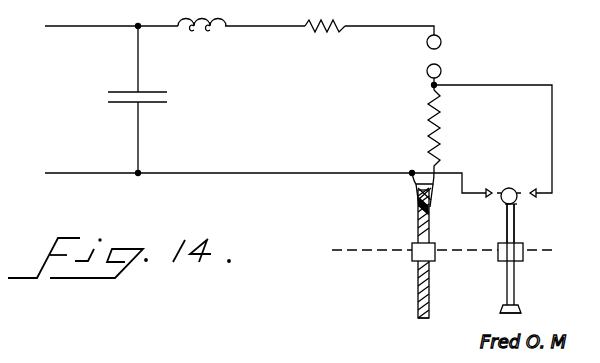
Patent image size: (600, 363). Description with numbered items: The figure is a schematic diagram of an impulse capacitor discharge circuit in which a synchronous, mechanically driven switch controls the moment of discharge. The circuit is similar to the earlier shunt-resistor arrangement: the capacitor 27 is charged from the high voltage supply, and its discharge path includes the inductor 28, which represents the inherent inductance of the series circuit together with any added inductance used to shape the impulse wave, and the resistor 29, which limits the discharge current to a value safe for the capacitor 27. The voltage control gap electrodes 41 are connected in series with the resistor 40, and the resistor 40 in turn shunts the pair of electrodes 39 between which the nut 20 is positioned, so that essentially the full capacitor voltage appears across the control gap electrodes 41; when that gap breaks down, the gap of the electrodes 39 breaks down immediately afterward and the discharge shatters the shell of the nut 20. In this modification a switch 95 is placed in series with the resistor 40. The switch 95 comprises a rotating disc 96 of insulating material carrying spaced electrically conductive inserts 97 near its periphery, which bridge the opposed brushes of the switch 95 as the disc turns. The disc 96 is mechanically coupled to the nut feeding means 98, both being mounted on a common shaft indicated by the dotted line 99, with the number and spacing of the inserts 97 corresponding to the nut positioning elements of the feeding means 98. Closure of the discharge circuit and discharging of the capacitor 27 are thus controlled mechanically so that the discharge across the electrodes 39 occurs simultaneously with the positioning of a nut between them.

The nut 20 is at (509, 188).
The capacitor 27 is at (126, 104).
The inductor 28 is at (214, 32).
The resistor 29 is at (339, 30).
The electrodes 39 is at (505, 205).
The resistor 40 is at (430, 128).
The voltage control gap electrodes 41 is at (441, 70).
The switch 95 is at (416, 196).
The disc 96 is at (417, 277).
The electrically conductive inserts 97 is at (417, 302).
The nut feeding means 98 is at (515, 278).
The common shaft 99 is at (330, 253).